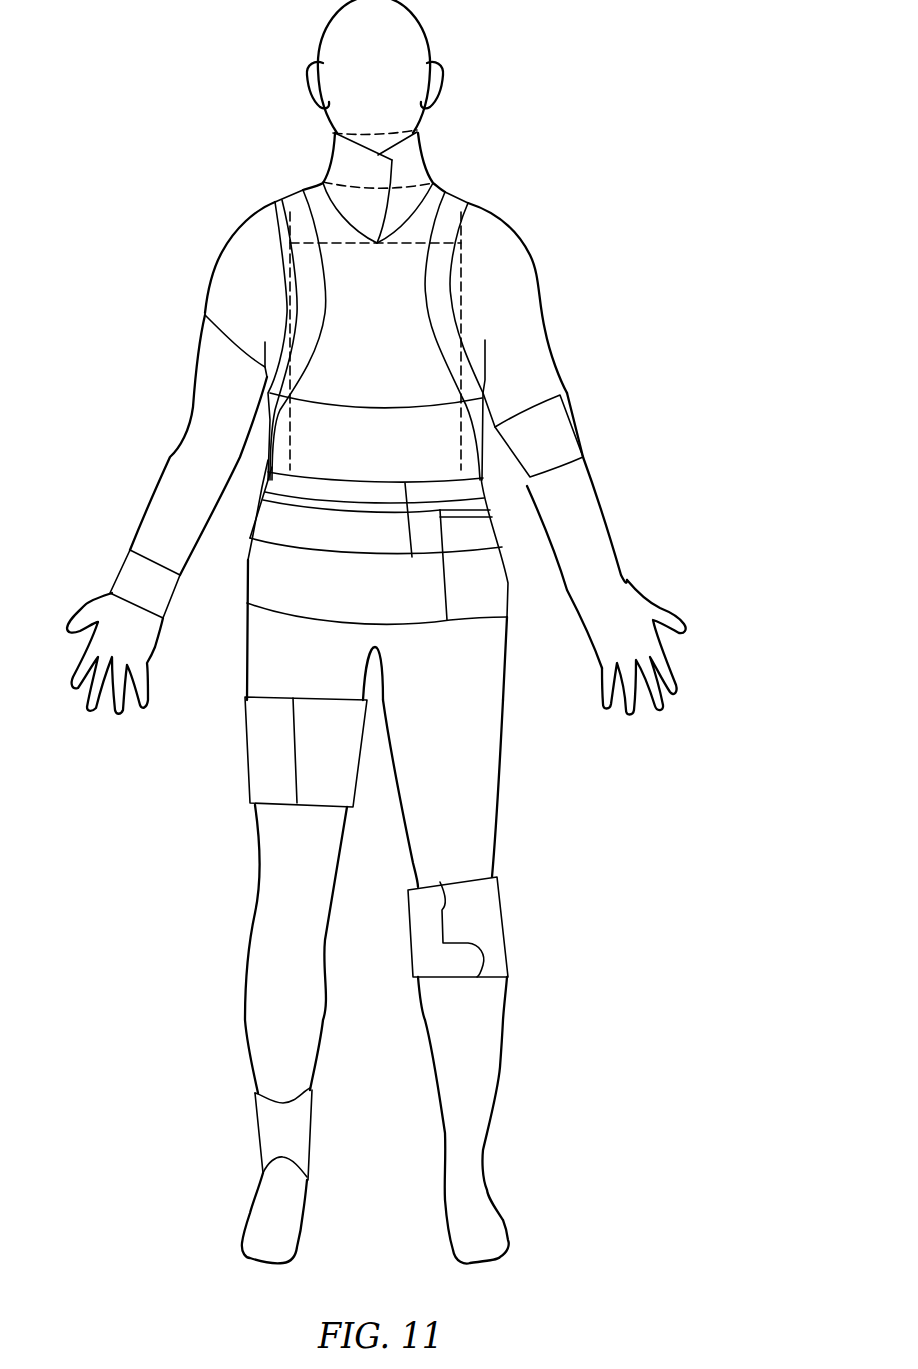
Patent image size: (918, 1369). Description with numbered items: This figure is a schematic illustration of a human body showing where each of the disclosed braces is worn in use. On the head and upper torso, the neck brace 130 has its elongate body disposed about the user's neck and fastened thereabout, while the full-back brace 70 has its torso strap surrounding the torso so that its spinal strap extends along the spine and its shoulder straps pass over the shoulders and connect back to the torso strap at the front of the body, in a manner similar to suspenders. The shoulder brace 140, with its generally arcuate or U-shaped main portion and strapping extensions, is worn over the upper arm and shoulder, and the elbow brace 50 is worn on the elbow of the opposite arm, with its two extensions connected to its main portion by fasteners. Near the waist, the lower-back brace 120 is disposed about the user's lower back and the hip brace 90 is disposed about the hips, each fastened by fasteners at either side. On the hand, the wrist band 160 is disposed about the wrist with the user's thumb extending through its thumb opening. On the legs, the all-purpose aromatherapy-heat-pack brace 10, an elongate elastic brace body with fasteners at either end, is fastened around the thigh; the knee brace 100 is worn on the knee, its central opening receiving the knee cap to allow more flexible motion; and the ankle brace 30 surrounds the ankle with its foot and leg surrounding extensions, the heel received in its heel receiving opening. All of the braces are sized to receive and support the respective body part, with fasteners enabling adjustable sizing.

The all-purpose aromatherapy-heat-pack brace 10 is at (245, 750).
The ankle brace 30 is at (255, 1125).
The elbow brace 50 is at (575, 433).
The full-back brace 70 is at (448, 242).
The hip brace 90 is at (508, 583).
The knee brace 100 is at (500, 912).
The lower-back brace 120 is at (263, 457).
The neck brace 130 is at (353, 170).
The shoulder brace 140 is at (232, 262).
The wrist band 160 is at (135, 580).